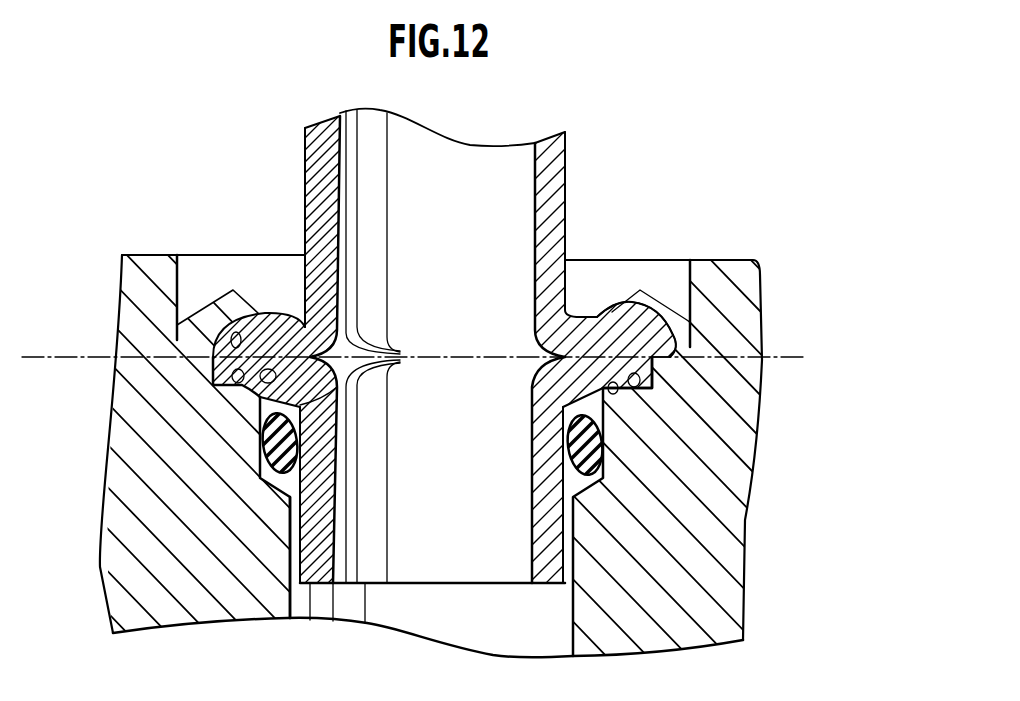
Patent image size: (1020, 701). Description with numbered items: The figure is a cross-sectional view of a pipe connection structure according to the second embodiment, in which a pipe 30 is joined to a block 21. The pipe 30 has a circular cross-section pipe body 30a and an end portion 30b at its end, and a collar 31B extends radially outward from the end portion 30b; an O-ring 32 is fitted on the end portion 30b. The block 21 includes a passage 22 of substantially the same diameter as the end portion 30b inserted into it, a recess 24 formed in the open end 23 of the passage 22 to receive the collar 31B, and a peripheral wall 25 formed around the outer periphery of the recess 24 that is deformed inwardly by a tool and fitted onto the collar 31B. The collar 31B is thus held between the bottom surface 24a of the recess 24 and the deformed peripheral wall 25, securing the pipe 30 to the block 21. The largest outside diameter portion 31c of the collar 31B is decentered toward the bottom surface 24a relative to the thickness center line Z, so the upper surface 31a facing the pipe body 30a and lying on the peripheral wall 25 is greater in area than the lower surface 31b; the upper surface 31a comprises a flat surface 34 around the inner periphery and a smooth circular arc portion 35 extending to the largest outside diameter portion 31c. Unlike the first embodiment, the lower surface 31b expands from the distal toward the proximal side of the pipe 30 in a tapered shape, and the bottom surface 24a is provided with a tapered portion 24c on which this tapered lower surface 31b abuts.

The thickness center line Z is at (83, 357).
The block 21 is at (173, 540).
The passage 22 is at (293, 603).
The open end 23 is at (217, 263).
The recess 24 is at (230, 357).
The bottom surface 24a is at (255, 400).
The tapered portion 24c is at (265, 425).
The peripheral wall 25 is at (250, 313).
The pipe 30 is at (566, 150).
The pipe body 30a is at (560, 178).
The end portion 30b is at (547, 543).
The upper surface 31a is at (735, 188).
The collar 31B is at (255, 348).
The lower surface 31b is at (605, 420).
The largest outside diameter portion 31c is at (222, 362).
The O-ring 32 is at (605, 450).
The flat surface 34 is at (613, 308).
The circular arc portion 35 is at (633, 336).